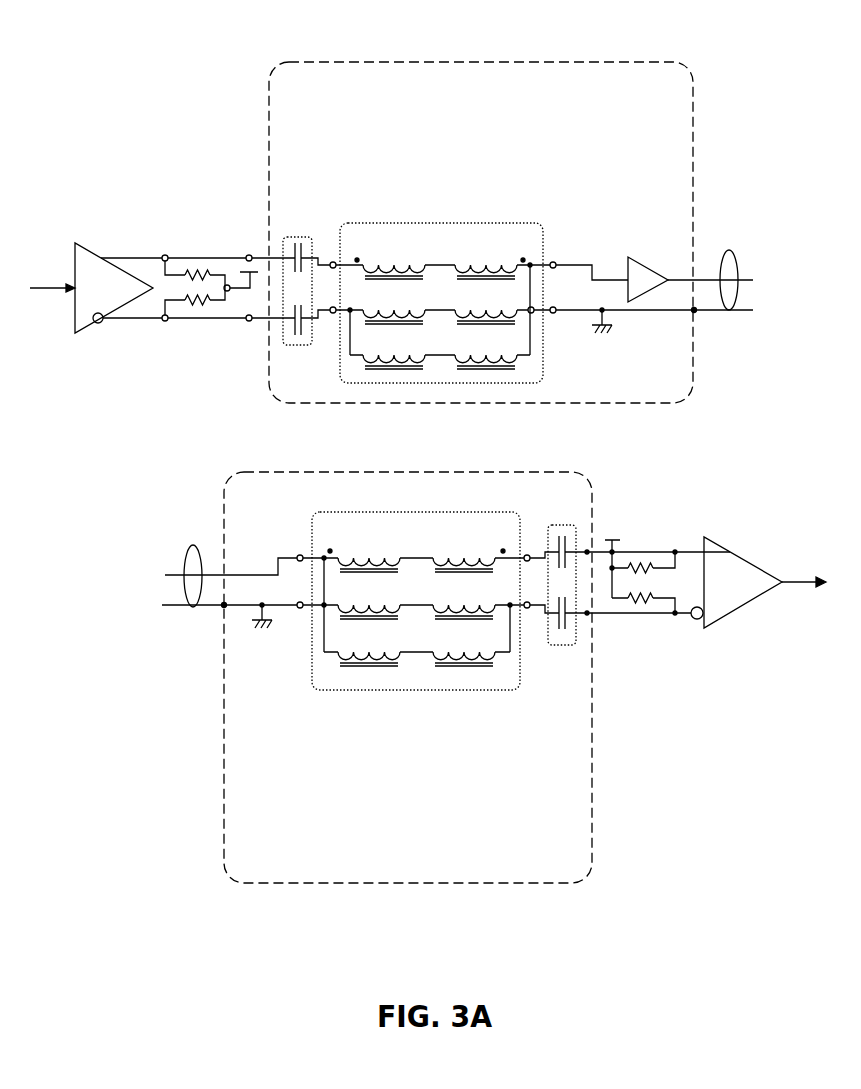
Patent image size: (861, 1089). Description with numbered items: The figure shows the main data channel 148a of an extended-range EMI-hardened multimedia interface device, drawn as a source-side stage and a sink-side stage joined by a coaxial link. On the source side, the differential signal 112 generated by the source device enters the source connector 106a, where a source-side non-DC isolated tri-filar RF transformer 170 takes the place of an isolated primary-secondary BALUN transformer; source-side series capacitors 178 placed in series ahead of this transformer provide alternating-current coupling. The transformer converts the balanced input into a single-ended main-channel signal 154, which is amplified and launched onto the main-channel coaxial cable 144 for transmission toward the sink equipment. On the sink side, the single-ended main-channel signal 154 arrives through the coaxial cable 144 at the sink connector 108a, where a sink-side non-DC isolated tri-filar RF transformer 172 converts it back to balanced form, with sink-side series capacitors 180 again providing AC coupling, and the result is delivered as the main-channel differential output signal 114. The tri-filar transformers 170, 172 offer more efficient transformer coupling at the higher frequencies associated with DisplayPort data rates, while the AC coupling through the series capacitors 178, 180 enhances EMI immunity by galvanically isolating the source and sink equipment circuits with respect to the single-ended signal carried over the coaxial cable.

The main data channel 148a is at (124, 97).
The source connector 106a is at (668, 122).
The sink connector 108a is at (318, 846).
The differential signal 112 is at (144, 265).
The main-channel differential output signal 114 is at (684, 560).
The main-channel coaxial cable 144 is at (731, 250).
The single-ended main-channel signal 154 is at (814, 344).
The source-side non-DC isolated tri-filar RF transformer 170 is at (444, 223).
The sink-side non-DC isolated tri-filar RF transformer 172 is at (415, 691).
The source-side series capacitors 178 is at (300, 237).
The sink-side series capacitors 180 is at (565, 646).